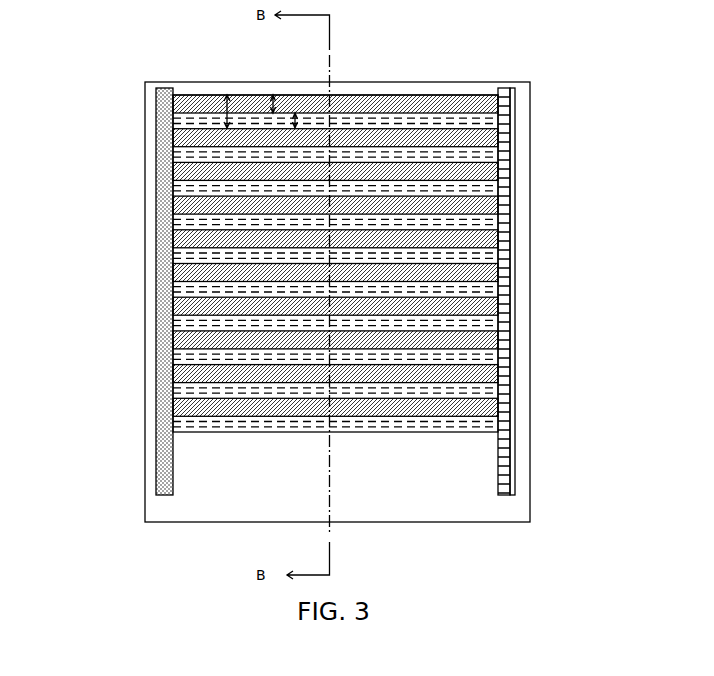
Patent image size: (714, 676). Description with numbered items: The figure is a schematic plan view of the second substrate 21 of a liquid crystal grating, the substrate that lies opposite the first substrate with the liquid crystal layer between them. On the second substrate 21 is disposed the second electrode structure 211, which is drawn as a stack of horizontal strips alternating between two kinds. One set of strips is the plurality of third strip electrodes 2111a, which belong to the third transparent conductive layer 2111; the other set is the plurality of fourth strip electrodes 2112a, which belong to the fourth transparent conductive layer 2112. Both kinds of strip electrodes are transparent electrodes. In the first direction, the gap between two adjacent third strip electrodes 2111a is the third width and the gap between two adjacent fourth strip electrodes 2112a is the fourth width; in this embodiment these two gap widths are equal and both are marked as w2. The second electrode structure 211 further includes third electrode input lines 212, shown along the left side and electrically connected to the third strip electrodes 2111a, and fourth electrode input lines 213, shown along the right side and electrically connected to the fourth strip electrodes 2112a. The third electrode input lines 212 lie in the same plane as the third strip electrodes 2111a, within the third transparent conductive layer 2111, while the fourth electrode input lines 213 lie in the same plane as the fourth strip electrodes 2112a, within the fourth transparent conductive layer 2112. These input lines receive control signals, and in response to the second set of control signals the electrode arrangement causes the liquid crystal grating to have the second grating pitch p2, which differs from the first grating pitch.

The second substrate 21 is at (508, 508).
The second electrode structure 211 is at (383, 95).
The third transparent conductive layer 2111 is at (269, 235).
The third strip electrode 2111a is at (193, 105).
The fourth transparent conductive layer 2112 is at (402, 241).
The fourth strip electrode 2112a is at (453, 120).
The third electrode input lines 212 is at (163, 453).
The fourth electrode input lines 213 is at (502, 457).
The second grating pitch p2 is at (228, 115).
The gap width between adjacent strip electrodes w2 is at (296, 123).